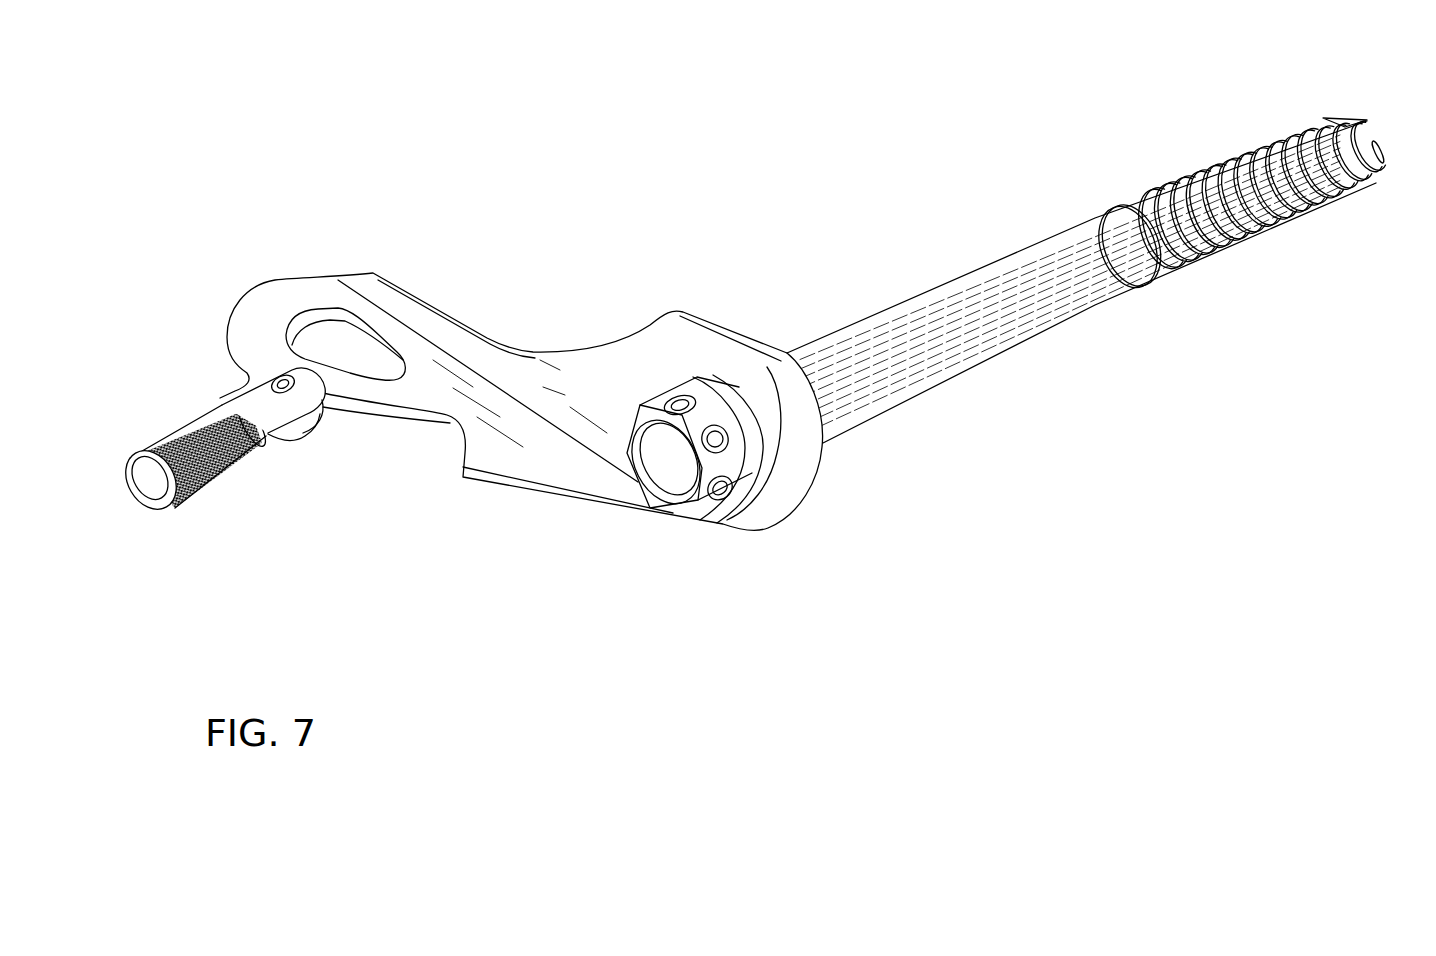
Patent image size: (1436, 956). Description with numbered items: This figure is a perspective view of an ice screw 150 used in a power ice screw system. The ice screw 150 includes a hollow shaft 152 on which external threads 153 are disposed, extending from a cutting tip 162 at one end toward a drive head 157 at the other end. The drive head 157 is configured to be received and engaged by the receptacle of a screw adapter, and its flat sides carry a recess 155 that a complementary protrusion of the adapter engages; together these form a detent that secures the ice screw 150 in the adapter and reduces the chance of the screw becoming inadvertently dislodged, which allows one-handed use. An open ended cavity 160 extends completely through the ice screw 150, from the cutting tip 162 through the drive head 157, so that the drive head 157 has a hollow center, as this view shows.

The ice screw 150 is at (1141, 563).
The hollow shaft 152 is at (945, 287).
The external threads 153 is at (1228, 253).
The recess 155 is at (716, 426).
The drive head 157 is at (688, 503).
The open ended cavity 160 is at (653, 468).
The cutting tip 162 is at (1380, 155).